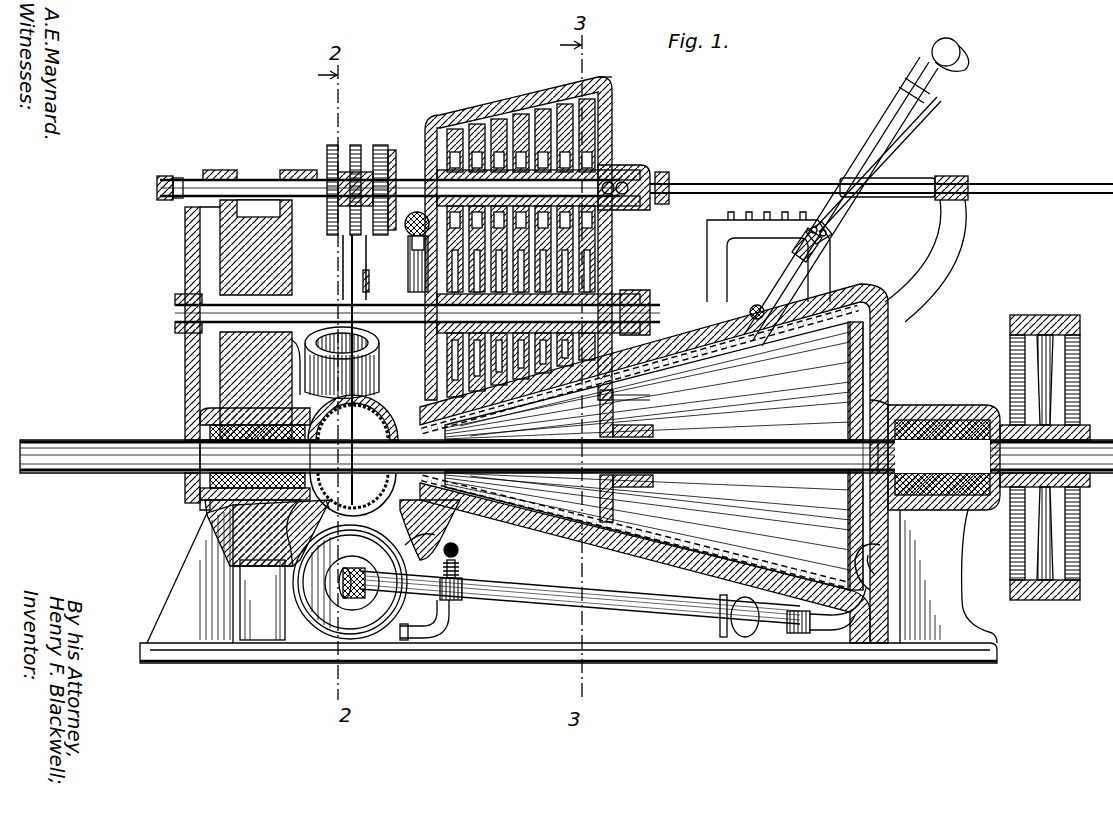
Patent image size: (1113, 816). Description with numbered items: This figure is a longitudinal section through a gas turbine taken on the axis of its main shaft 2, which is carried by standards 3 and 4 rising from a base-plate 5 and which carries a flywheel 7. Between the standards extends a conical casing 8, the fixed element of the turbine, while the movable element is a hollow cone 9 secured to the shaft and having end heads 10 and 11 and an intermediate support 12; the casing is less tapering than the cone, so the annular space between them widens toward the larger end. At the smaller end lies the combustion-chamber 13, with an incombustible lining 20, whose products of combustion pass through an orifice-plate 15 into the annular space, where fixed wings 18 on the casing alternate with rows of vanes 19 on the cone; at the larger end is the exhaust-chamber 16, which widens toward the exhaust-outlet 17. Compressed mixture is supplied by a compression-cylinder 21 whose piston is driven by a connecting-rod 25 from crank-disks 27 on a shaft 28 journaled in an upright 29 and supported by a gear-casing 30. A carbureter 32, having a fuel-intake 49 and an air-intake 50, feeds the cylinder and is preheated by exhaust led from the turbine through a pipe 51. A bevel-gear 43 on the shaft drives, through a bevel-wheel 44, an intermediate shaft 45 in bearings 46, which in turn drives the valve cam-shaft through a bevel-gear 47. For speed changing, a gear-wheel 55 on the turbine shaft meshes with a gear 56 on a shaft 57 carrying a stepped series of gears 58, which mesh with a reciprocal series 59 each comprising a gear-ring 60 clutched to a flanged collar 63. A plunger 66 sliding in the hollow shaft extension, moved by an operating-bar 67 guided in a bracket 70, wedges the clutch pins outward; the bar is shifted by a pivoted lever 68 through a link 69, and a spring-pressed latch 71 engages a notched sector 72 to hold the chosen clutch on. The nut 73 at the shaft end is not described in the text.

The main shaft 2 is at (100, 440).
The standard 3 is at (238, 571).
The standard 4 is at (962, 612).
The base-plate 5 is at (676, 656).
The flywheel 7 is at (1078, 560).
The conical casing 8 is at (586, 548).
The cone 9 is at (654, 456).
The end head 10 is at (428, 530).
The end head 11 is at (872, 360).
The intermediate support 12 is at (600, 552).
The combustion-chamber 13 is at (260, 533).
The orifice-plate 15 is at (353, 494).
The exhaust-chamber 16 is at (890, 402).
The exhaust-outlet 17 is at (885, 570).
The wings 18 is at (498, 522).
The vanes 19 is at (552, 530).
The incombustible lining 20 is at (353, 494).
The compression-cylinder 21 is at (305, 375).
The connecting-rod 25 is at (366, 245).
The crank-disks 27 is at (372, 145).
The shaft 28 is at (250, 180).
The upright 29 is at (220, 262).
The gear-casing 30 is at (540, 102).
The carbureter 32 is at (330, 628).
The bevel-gear 43 is at (393, 150).
The bevel-wheel 44 is at (405, 237).
The intermediate shaft 45 is at (408, 270).
The bearings 46 is at (363, 282).
The bevel-gear 47 is at (353, 418).
The fuel-intake 49 is at (392, 555).
The air-intake 50 is at (455, 610).
The pipe 51 is at (538, 600).
The gear-wheel 55 is at (200, 420).
The gear 56 is at (186, 355).
The shaft 57 is at (175, 313).
The stepped series of gears 58 is at (612, 290).
The reciprocal series of gears 59 is at (478, 124).
The gear-ring 60 is at (600, 112).
The flanged collar 63 is at (605, 160).
The plunger 66 is at (630, 200).
The operating-bar 67 is at (770, 180).
The lever 68 is at (880, 128).
The link 69 is at (895, 180).
The bracket 70 is at (945, 258).
The spring-pressed latch 71 is at (835, 228).
The notched sector 72 is at (770, 226).
The nut 73 is at (157, 188).